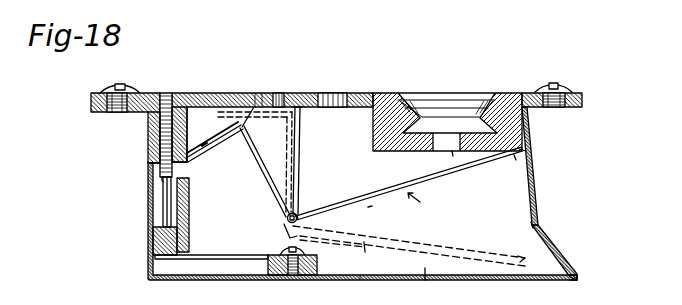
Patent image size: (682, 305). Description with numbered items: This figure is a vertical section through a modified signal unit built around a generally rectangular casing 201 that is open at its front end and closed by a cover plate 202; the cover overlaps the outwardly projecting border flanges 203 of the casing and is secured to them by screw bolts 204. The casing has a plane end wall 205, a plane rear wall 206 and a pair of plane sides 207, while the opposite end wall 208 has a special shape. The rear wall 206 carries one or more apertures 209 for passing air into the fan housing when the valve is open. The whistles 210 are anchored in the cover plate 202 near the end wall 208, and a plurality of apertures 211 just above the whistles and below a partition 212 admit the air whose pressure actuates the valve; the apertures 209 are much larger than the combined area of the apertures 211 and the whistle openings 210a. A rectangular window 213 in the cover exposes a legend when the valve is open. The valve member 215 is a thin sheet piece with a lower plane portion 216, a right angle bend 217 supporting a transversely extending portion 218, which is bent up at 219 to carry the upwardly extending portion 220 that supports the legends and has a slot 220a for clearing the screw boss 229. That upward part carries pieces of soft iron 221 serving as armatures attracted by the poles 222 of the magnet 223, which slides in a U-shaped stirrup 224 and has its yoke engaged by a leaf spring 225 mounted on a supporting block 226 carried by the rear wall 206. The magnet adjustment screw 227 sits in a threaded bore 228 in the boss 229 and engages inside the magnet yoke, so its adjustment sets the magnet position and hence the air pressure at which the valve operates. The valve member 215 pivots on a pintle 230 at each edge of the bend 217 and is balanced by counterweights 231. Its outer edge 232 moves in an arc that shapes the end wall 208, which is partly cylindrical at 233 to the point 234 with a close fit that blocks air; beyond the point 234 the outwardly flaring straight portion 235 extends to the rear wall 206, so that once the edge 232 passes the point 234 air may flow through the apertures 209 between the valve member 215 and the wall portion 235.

The casing 201 is at (148, 197).
The cover plate 202 is at (522, 91).
The border flanges 203 is at (528, 110).
The screw bolts 204 is at (110, 86).
The end wall 205 is at (148, 238).
The rear wall 206 is at (360, 279).
The sides 207 is at (425, 281).
The end wall 208 is at (537, 181).
The apertures 209 is at (540, 280).
The whistles 210 is at (393, 92).
The whistle openings 210a is at (453, 152).
The apertures 211 is at (328, 92).
The partition 212 is at (300, 152).
The rectangular window 213 is at (259, 92).
The valve member 215 is at (427, 202).
The lower plane portion 216 is at (382, 197).
The right angle bend 217 is at (284, 220).
The transversely extending portion 218 is at (266, 179).
The bend 219 is at (277, 92).
The upwardly extending portion 220 is at (218, 136).
The slot 220a is at (198, 149).
The pieces of soft iron 221 is at (255, 119).
The poles 222 is at (148, 178).
The magnet 223 is at (178, 205).
The U-shaped stirrup 224 is at (187, 236).
The leaf spring 225 is at (233, 260).
The supporting block 226 is at (300, 279).
The magnet adjustment screw 227 is at (166, 92).
The threaded bore 228 is at (176, 96).
The boss 229 is at (182, 120).
The pintle 230 is at (298, 213).
The counterweights 231 is at (368, 207).
The outer edge 232 is at (518, 166).
The partly cylindrical wall portion 233 is at (524, 151).
The point 234 is at (532, 226).
The outwardly flaring straight portion 235 is at (556, 249).